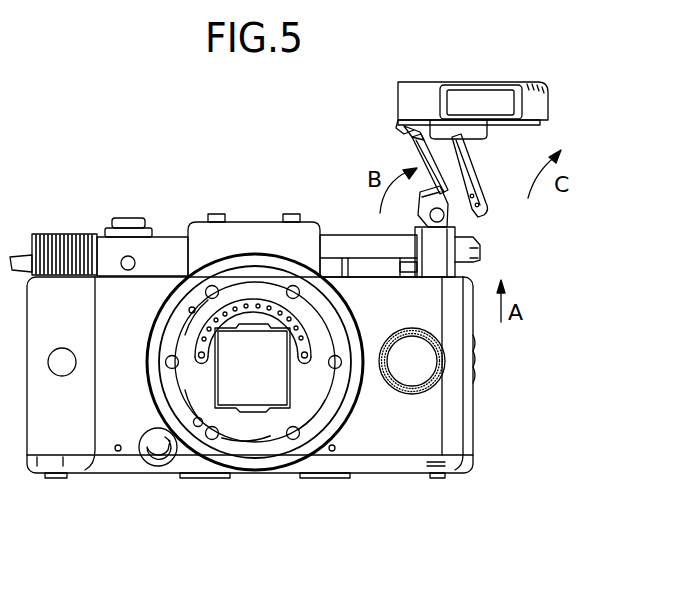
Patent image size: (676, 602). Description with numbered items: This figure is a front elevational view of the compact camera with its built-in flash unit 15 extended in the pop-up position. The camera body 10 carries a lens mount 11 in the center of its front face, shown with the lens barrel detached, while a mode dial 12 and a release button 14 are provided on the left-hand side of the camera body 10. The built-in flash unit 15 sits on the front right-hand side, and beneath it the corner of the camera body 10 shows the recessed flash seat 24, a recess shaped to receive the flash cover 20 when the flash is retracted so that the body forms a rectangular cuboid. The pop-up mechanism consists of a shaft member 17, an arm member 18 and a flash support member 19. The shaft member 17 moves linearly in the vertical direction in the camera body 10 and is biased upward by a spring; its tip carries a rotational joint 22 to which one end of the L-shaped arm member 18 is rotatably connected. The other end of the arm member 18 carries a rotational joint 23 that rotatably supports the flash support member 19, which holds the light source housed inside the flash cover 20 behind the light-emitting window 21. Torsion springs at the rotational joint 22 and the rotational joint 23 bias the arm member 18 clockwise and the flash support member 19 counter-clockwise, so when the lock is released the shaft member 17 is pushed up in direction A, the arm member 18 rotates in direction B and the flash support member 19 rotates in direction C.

The camera body 10 is at (278, 518).
The lens mount 11 is at (233, 443).
The mode dial 12 is at (50, 234).
The release button 14 is at (126, 218).
The built-in flash unit 15 is at (434, 82).
The shaft member 17 is at (458, 226).
The arm member 18 is at (458, 168).
The flash support member 19 is at (540, 126).
The flash cover 20 is at (548, 98).
The window 21 is at (498, 95).
The rotational joint 22 is at (430, 215).
The rotational joint 23 is at (412, 140).
The recessed flash seat 24 is at (345, 247).